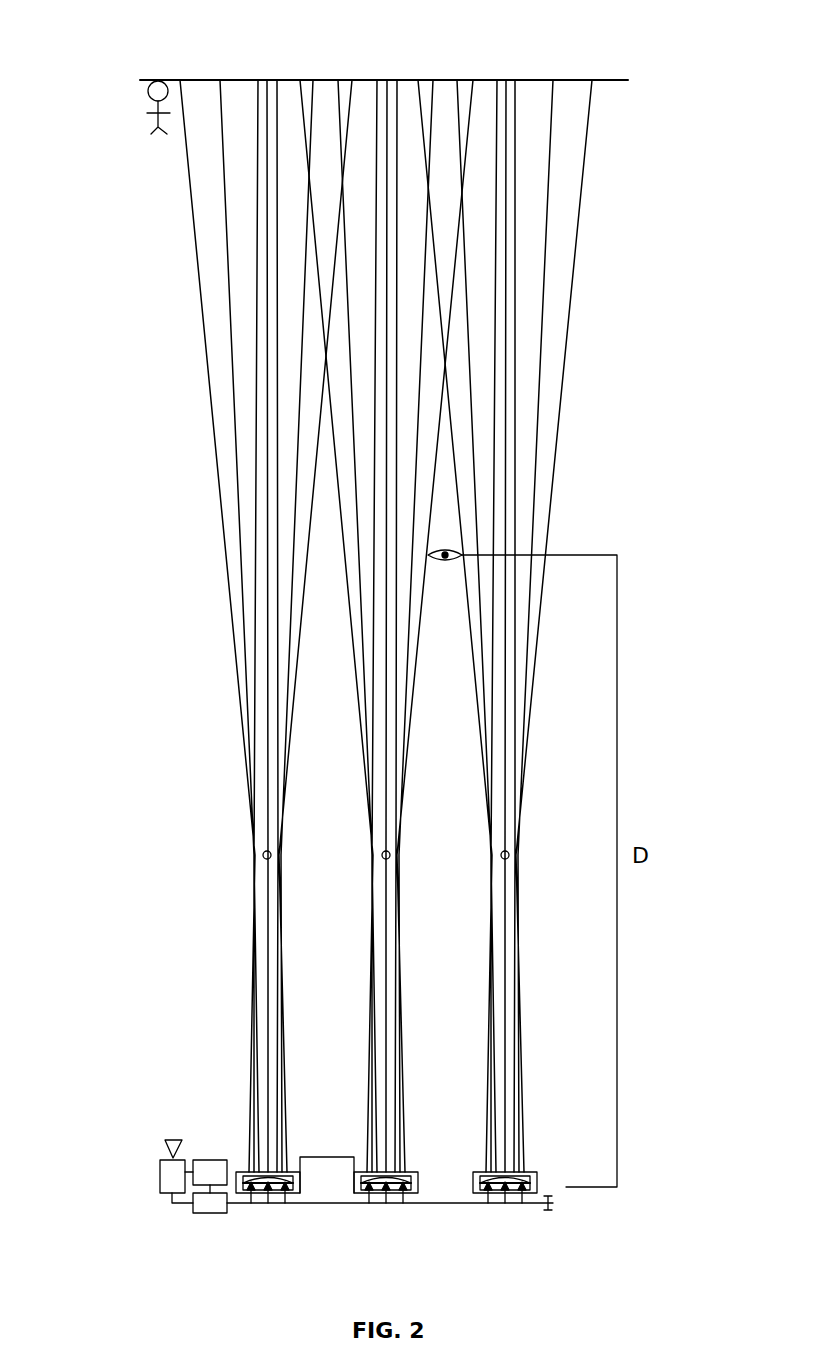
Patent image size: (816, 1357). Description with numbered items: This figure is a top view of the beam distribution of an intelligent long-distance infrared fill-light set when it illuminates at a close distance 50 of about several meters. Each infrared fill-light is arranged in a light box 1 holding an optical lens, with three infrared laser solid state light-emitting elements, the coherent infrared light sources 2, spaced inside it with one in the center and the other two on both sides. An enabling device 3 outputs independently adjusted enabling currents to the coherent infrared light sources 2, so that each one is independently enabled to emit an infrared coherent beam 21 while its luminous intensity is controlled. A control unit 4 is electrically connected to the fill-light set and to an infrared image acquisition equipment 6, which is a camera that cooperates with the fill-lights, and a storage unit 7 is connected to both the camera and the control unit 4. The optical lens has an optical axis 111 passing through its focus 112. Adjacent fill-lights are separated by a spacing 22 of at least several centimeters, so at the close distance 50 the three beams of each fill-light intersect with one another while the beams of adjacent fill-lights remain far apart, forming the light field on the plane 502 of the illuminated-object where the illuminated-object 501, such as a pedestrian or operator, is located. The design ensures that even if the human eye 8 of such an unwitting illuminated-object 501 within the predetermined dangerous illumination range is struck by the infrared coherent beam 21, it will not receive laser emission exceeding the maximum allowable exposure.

The light box 1 is at (560, 1186).
The coherent infrared light source 2 is at (417, 1180).
The enabling device 3 is at (472, 1193).
The control unit 4 is at (190, 1213).
The infrared image acquisition equipment 6 is at (160, 1176).
The storage unit 7 is at (199, 1160).
The human eye 8 is at (458, 552).
The infrared coherent beam 21 is at (247, 1120).
The spacing 22 is at (323, 1157).
The close distance 50 is at (650, 80).
The illuminated-object 501 is at (150, 133).
The plane of the illuminated-object 502 is at (140, 80).
The optical axis 111 is at (263, 687).
The focus 112 is at (260, 855).